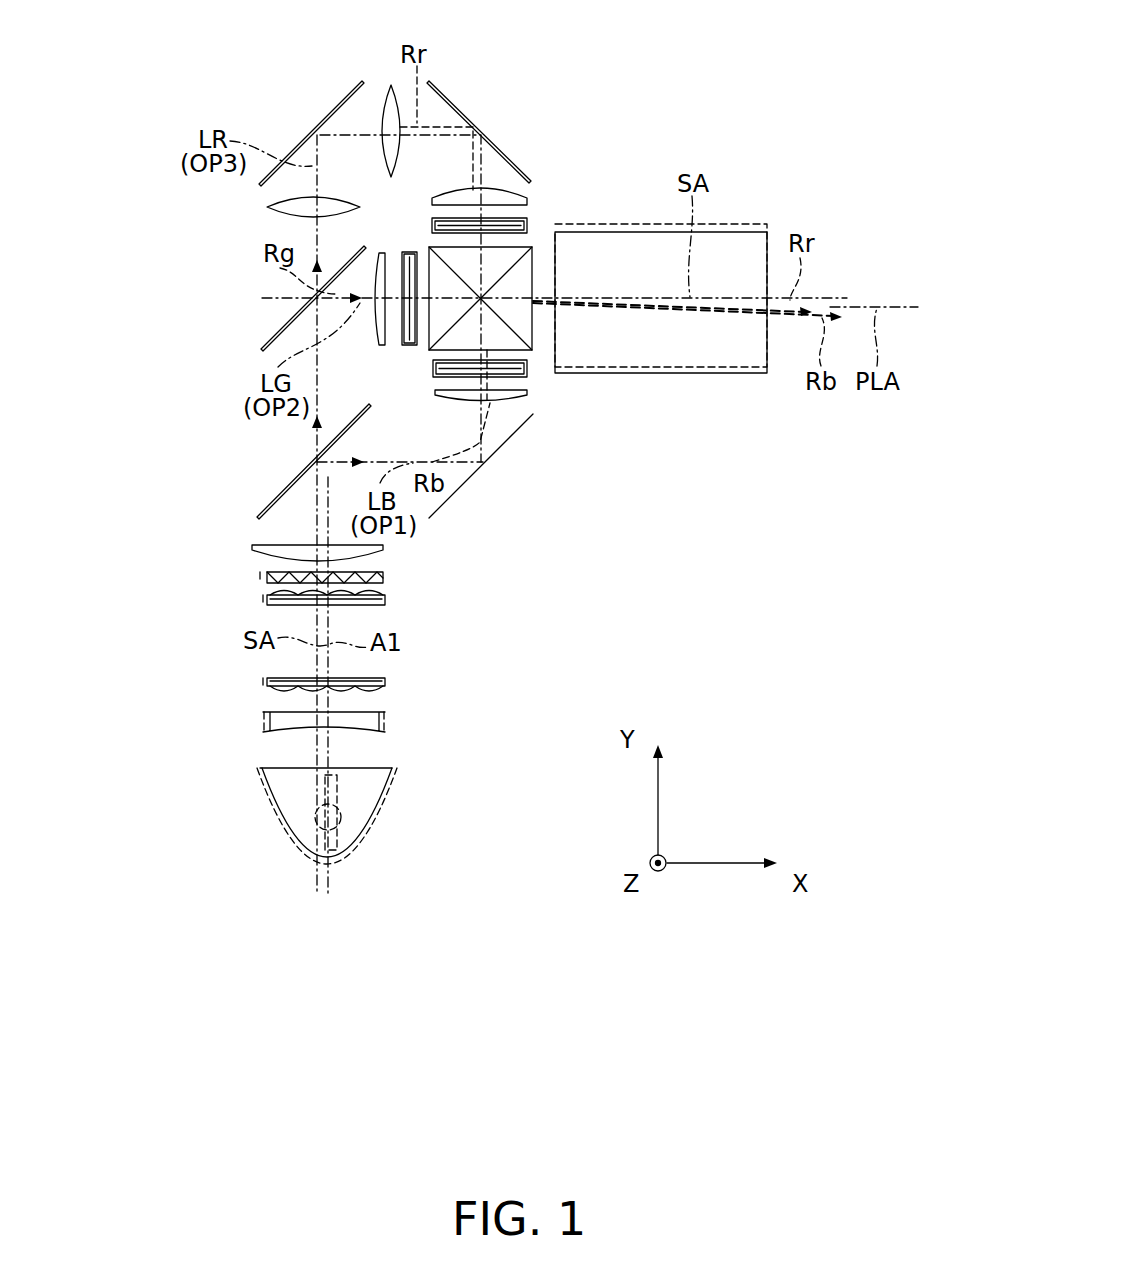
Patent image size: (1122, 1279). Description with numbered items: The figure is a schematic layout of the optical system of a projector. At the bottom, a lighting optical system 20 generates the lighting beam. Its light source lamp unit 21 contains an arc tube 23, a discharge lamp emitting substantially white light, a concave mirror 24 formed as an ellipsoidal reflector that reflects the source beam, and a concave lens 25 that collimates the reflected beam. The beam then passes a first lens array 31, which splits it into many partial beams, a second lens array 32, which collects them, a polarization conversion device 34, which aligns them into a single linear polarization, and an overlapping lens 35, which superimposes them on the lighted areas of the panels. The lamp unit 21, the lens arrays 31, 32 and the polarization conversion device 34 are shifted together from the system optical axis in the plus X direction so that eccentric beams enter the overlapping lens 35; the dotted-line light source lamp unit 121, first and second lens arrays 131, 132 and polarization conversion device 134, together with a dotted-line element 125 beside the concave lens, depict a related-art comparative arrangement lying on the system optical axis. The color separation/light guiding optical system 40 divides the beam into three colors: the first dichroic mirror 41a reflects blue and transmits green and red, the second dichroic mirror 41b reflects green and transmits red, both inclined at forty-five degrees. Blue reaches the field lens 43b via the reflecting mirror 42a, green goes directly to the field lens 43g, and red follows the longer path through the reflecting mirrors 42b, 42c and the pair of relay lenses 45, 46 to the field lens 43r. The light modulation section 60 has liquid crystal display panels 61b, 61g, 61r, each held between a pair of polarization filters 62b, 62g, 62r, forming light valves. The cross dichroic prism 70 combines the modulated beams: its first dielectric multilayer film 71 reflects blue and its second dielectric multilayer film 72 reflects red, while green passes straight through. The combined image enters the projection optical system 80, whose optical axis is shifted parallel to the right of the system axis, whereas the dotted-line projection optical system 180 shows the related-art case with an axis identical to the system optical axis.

The lighting optical system 20 is at (498, 670).
The light source lamp unit 21 is at (413, 781).
The arc tube 23 is at (316, 824).
The concave mirror 24 is at (377, 817).
The concave lens 25 is at (385, 720).
The first lens array 31 is at (385, 680).
The second lens array 32 is at (385, 600).
The polarization conversion device 34 is at (383, 580).
The overlapping lens 35 is at (383, 547).
The color separation/light guiding optical system 40 is at (220, 265).
The first dichroic mirror 41a is at (285, 491).
The second dichroic mirror 41b is at (268, 343).
The reflecting mirror 42a is at (472, 476).
The reflecting mirror 42b is at (305, 140).
The reflecting mirror 42c is at (468, 120).
The field lens 43r is at (490, 187).
The field lens 43g is at (374, 348).
The field lens 43b is at (487, 400).
The relay lens 45 is at (267, 207).
The relay lens 46 is at (390, 85).
The light modulation section 60 is at (523, 400).
The liquid crystal display panel 61r is at (490, 218).
The liquid crystal display panel 61g is at (412, 347).
The liquid crystal display panel 61b is at (512, 392).
The polarization filter 62r is at (433, 222).
The polarization filter 62g is at (406, 252).
The polarization filter 62b is at (458, 378).
The cross dichroic prism 70 is at (544, 268).
The first dielectric multilayer film 71 is at (533, 246).
The second dielectric multilayer film 72 is at (530, 368).
The projection optical system 80 is at (667, 375).
The light source lamp unit 121 is at (245, 784).
The lens holder 125 is at (263, 722).
The first lens array 131 is at (263, 683).
The second lens array 132 is at (263, 600).
The polarization conversion device 134 is at (262, 573).
The projection optical system 180 is at (718, 368).